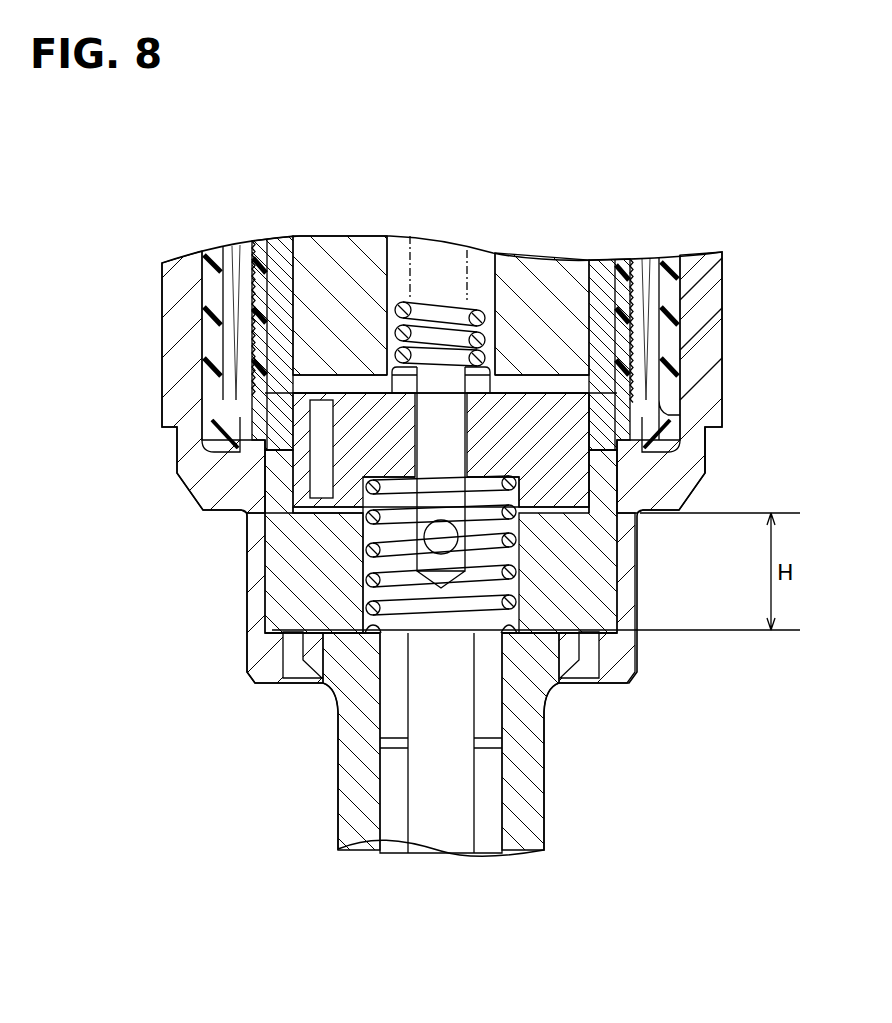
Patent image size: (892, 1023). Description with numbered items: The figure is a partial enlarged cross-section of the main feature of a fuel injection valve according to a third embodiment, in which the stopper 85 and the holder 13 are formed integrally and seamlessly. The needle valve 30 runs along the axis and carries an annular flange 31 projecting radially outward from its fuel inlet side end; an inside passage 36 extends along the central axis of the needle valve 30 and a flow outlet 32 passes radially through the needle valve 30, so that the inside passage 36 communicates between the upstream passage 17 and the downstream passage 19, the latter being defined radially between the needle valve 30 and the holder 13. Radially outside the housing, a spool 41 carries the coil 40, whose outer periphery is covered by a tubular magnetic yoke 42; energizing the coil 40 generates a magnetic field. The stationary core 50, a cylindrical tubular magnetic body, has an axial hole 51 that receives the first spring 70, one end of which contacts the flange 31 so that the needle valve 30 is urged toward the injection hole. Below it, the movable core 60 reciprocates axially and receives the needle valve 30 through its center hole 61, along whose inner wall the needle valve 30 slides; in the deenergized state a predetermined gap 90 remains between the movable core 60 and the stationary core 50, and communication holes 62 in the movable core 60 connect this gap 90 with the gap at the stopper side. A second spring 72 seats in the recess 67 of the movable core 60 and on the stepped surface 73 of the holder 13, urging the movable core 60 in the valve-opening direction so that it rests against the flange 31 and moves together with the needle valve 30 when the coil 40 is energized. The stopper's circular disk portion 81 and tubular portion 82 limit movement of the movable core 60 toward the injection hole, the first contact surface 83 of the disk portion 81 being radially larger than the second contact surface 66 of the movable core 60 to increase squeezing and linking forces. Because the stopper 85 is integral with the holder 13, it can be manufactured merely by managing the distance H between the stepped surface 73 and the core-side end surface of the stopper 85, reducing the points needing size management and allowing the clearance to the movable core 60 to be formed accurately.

The holder 13 is at (280, 545).
The upstream passage 17 is at (433, 265).
The downstream passage 19 is at (393, 815).
The needle valve 30 is at (437, 716).
The flange 31 is at (290, 352).
The flow outlet 32 is at (446, 541).
The inside passage 36 is at (570, 452).
The coil 40 is at (650, 296).
The spool 41 is at (620, 315).
The yoke 42 is at (697, 348).
The stationary core 50 is at (340, 285).
The hole 51 is at (478, 312).
The movable core 60 is at (350, 443).
The center hole 61 is at (490, 383).
The communication holes 62 is at (320, 435).
The second contact surface 66 is at (557, 513).
The recess 67 is at (530, 485).
The first spring 70 is at (398, 262).
The second spring 72 is at (370, 583).
The stepped surface 73 is at (363, 614).
The circular disk portion 81 is at (290, 512).
The tubular portion 82 is at (373, 576).
The first contact surface 83 is at (623, 488).
The stopper 85 is at (293, 490).
The gap 90 is at (330, 383).